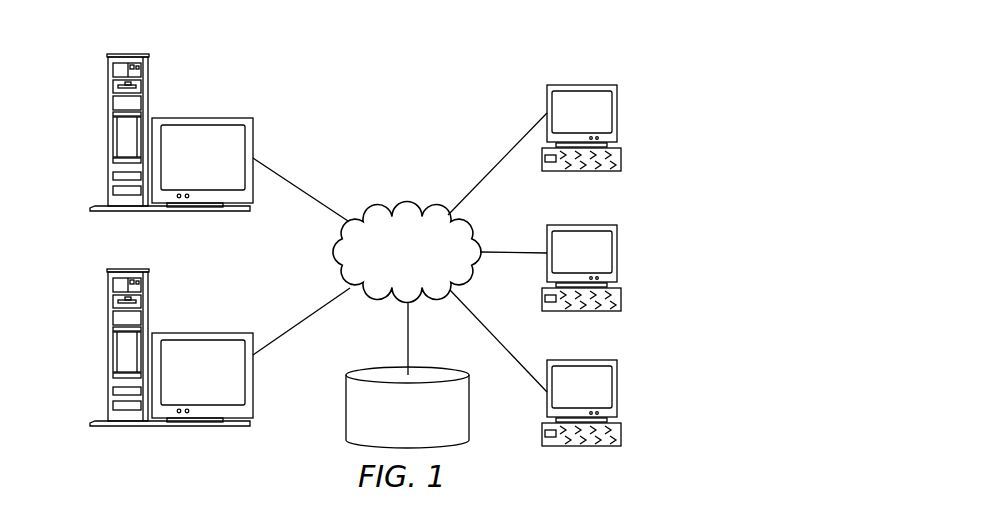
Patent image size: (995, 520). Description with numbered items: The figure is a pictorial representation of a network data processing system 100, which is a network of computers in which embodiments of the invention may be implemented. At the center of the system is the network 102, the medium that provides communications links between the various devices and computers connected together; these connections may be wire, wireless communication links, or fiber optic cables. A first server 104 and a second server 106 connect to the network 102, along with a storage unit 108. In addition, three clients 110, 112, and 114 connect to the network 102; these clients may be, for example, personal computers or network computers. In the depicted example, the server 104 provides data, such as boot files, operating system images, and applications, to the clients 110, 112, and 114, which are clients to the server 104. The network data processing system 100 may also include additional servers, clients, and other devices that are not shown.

The network data processing system 100 is at (461, 89).
The network 102 is at (381, 205).
The server 104 is at (108, 133).
The server 106 is at (108, 348).
The storage unit 108 is at (346, 420).
The client 110 is at (617, 113).
The client 112 is at (617, 253).
The client 114 is at (617, 390).